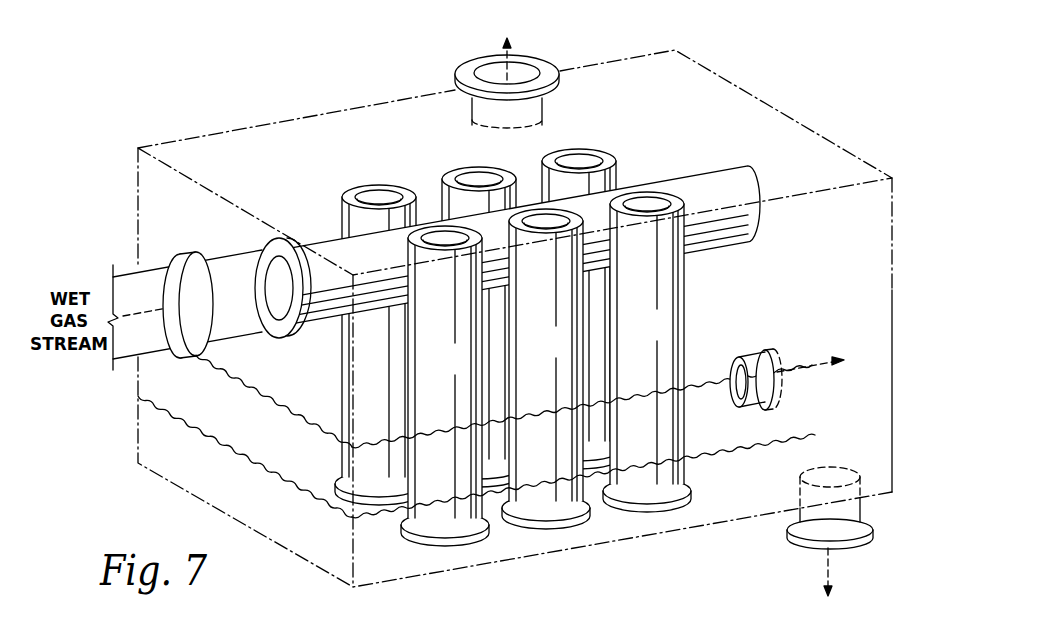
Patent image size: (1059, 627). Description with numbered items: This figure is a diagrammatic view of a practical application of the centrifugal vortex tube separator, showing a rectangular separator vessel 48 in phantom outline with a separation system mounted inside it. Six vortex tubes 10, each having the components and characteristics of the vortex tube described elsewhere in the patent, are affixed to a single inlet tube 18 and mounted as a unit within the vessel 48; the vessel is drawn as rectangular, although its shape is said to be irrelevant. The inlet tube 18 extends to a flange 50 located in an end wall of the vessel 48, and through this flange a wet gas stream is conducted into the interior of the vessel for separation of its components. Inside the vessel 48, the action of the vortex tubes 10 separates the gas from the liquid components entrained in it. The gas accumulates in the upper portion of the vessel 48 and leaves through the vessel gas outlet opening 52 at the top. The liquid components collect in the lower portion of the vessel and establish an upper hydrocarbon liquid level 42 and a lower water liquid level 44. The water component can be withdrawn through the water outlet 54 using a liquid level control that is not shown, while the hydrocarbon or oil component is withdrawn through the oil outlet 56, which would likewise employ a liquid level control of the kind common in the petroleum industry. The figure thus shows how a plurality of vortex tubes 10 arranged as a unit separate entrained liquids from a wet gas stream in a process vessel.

The vortex tube 10 is at (525, 322).
The inlet tube 18 is at (720, 183).
The upper hydrocarbon liquid level 42 is at (700, 390).
The lower water liquid level 44 is at (787, 438).
The vessel 48 is at (897, 227).
The flange 50 is at (263, 238).
The vessel gas outlet opening 52 is at (552, 62).
The water outlet 54 is at (790, 546).
The oil outlet 56 is at (763, 350).